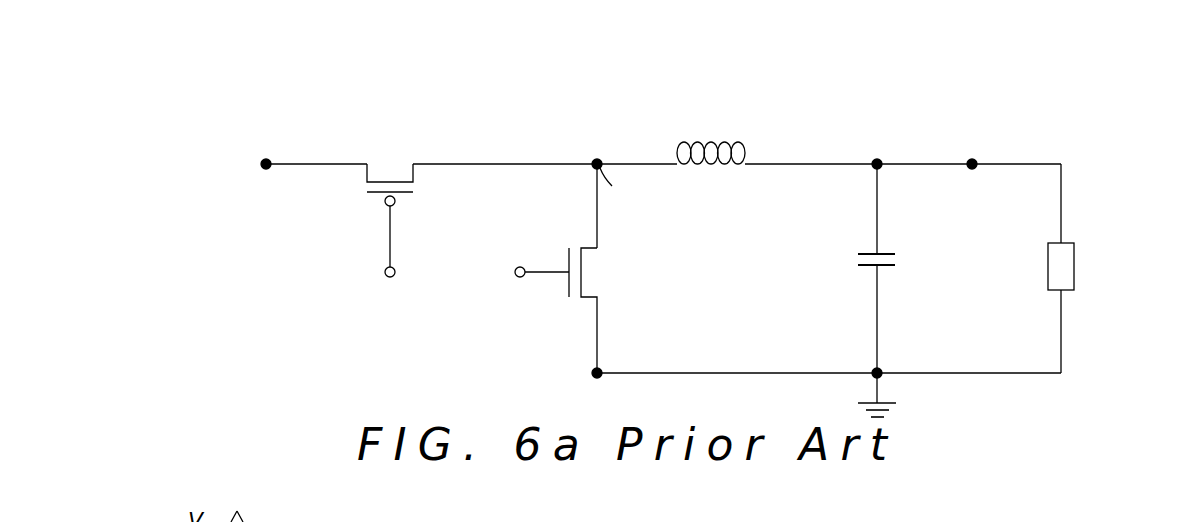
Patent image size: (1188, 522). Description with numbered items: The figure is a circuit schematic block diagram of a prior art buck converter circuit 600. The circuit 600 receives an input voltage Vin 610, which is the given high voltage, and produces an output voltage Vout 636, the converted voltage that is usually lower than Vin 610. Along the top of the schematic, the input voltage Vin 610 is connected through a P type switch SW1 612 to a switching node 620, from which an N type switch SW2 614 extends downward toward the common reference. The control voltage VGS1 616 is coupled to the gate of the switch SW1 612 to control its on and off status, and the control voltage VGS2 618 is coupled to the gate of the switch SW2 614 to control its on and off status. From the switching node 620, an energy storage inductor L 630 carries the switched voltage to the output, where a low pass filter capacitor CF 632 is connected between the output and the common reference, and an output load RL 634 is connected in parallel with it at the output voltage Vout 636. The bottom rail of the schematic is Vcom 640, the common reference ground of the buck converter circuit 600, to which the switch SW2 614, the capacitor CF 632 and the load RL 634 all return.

The buck converter circuit 600 is at (1013, 45).
The input voltage Vin 610 is at (241, 163).
The P type switch SW1 612 is at (424, 184).
The N type switch SW2 614 is at (562, 259).
The control voltage VGS1 616 is at (396, 278).
The control voltage VGS2 618 is at (497, 302).
The switching node VS 620 is at (608, 189).
The energy storage inductor L 630 is at (715, 170).
The low pass filter capacitor CF 632 is at (855, 262).
The output load RL 634 is at (1085, 250).
The output voltage Vout 636 is at (990, 125).
The Vcom 640 is at (888, 387).